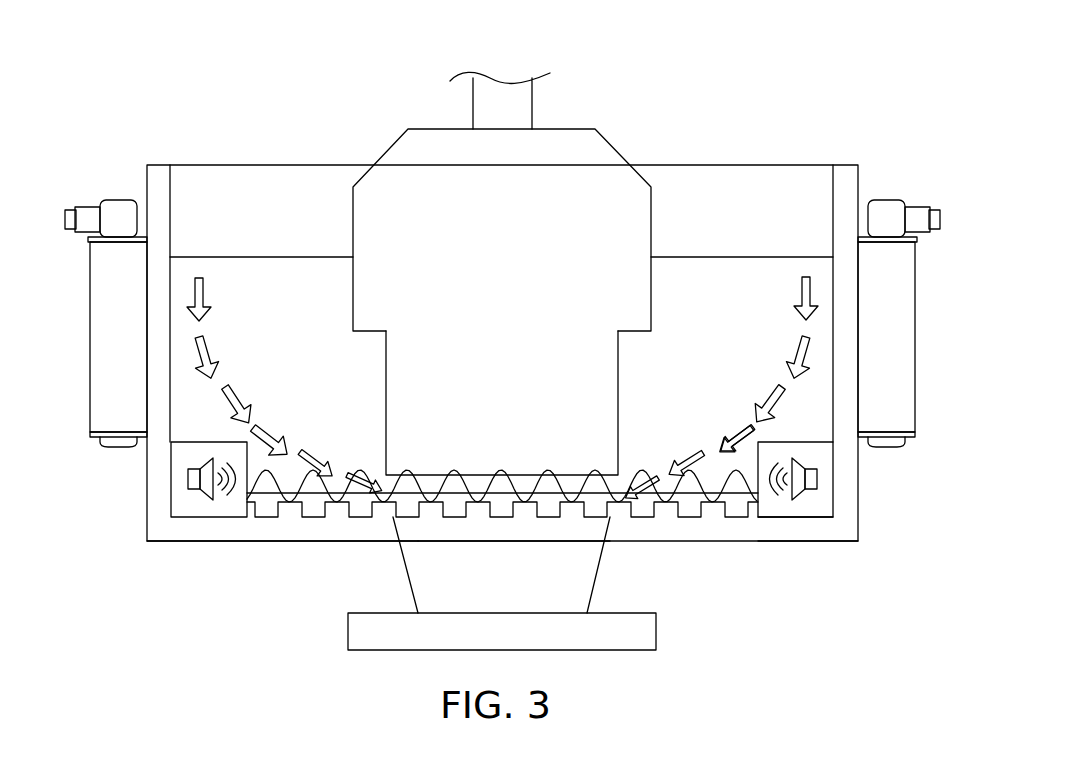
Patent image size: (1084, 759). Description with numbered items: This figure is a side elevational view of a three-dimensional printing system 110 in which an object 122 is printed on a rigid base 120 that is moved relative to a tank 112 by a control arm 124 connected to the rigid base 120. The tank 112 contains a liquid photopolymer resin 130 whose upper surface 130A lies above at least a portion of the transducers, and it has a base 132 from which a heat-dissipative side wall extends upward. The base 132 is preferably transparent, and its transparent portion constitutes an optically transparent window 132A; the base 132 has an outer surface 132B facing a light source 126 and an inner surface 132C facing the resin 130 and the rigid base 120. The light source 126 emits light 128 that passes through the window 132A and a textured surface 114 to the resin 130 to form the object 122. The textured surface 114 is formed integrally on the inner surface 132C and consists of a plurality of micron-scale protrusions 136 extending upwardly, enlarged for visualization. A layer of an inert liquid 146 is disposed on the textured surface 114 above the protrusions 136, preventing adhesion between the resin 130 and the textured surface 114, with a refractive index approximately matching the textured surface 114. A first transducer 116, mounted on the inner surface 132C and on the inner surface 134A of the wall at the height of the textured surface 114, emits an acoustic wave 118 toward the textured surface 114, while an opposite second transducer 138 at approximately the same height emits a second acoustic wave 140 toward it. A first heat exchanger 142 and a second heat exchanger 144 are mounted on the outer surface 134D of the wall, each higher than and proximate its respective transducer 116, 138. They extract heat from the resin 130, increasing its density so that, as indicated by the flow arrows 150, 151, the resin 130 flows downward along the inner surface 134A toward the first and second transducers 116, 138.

The 3D printing system 110 is at (93, 128).
The tank 112 is at (138, 470).
The textured surface 114 is at (526, 512).
The first transducer 116 is at (170, 498).
The acoustic wave 118 is at (270, 495).
The rigid base 120 is at (395, 145).
The object 122 is at (386, 385).
The control arm 124 is at (532, 107).
The light source 126 is at (657, 630).
The light 128 is at (597, 573).
The liquid photopolymer resin 130 is at (285, 257).
The upper surface of the liquid polymer resin 130A is at (693, 257).
The base 132 is at (788, 542).
The optically transparent window 132A is at (448, 542).
The outer surface of the base 132B is at (305, 542).
The inner surface of the base 132C is at (818, 512).
The inner surface of the wall 134A is at (832, 207).
The outer surface of the wall 134D is at (147, 172).
The protrusions 136 is at (313, 500).
The second transducer 138 is at (834, 467).
The second acoustic wave 140 is at (740, 468).
The first heat exchanger 142 is at (87, 340).
The second heat exchanger 144 is at (915, 342).
The inert liquid 146 is at (717, 497).
The flow arrow 150 is at (210, 347).
The flow arrow 151 is at (798, 292).